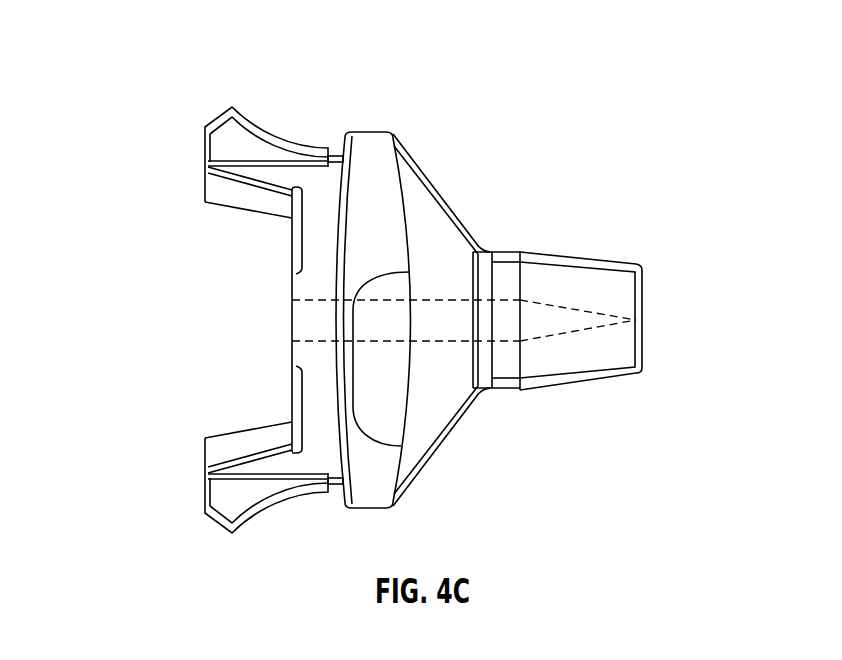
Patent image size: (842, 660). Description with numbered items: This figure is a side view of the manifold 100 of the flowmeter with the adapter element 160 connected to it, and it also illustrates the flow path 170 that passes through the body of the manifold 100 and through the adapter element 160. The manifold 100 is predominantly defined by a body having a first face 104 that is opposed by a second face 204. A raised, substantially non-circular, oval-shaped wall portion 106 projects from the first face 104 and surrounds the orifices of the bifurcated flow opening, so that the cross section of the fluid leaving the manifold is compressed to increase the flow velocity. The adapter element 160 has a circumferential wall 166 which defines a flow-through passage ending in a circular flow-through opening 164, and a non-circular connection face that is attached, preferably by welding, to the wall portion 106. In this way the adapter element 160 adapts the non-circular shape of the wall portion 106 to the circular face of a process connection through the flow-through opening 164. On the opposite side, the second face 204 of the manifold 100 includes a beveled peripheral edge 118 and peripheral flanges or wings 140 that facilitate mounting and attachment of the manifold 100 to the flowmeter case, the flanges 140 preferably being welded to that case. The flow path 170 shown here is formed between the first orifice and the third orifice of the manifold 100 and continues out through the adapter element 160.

The manifold 100 is at (139, 54).
The first face 104 is at (418, 163).
The wall portion 106 is at (507, 392).
The beveled peripheral edge 118 is at (341, 150).
The peripheral flanges 140 is at (226, 126).
The adapter element 160 is at (637, 267).
The flow-through opening 164 is at (641, 321).
The circumferential wall 166 is at (578, 270).
The flow path 170 is at (503, 327).
The second face 204 is at (292, 324).